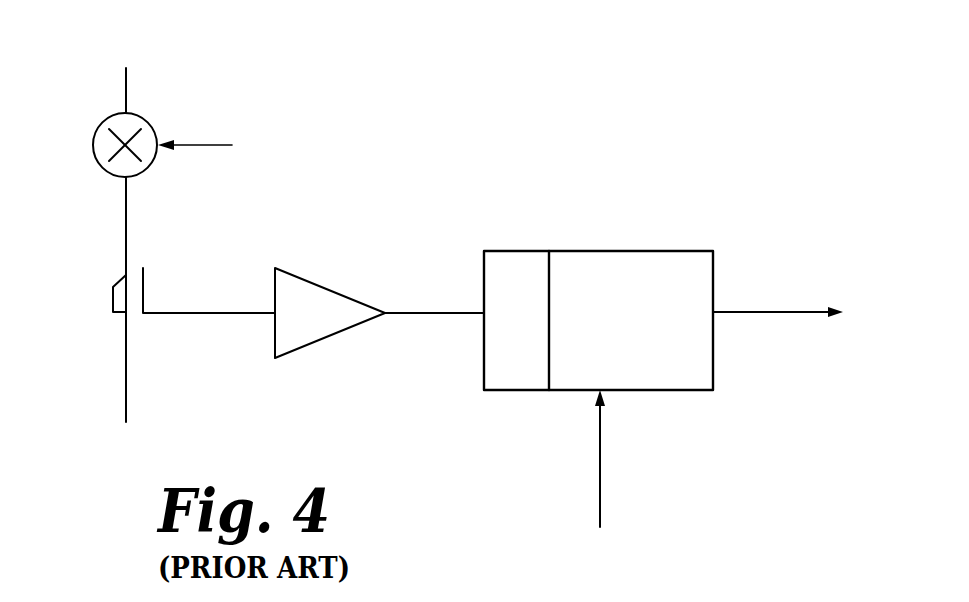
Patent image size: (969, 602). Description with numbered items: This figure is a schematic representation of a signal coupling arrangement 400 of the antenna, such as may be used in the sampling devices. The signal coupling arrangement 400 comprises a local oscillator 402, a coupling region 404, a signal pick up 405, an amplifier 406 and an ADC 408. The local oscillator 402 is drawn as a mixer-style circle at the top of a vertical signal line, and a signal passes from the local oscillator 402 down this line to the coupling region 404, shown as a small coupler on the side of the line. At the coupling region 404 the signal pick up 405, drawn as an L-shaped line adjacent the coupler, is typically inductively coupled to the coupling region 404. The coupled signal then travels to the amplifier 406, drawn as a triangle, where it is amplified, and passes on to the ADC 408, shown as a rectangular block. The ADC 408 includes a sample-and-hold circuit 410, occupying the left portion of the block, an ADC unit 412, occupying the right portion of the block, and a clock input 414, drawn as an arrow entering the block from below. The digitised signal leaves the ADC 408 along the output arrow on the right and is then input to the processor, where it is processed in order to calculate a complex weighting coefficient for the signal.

The signal coupling arrangement 400 is at (515, 128).
The local oscillator 402 is at (172, 118).
The coupling region 404 is at (113, 300).
The signal pick up 405 is at (153, 297).
The amplifier 406 is at (338, 290).
The ADC 408 is at (631, 322).
The sample-and-hold circuit 410 is at (503, 372).
The ADC unit 412 is at (675, 352).
The clock input 414 is at (600, 447).